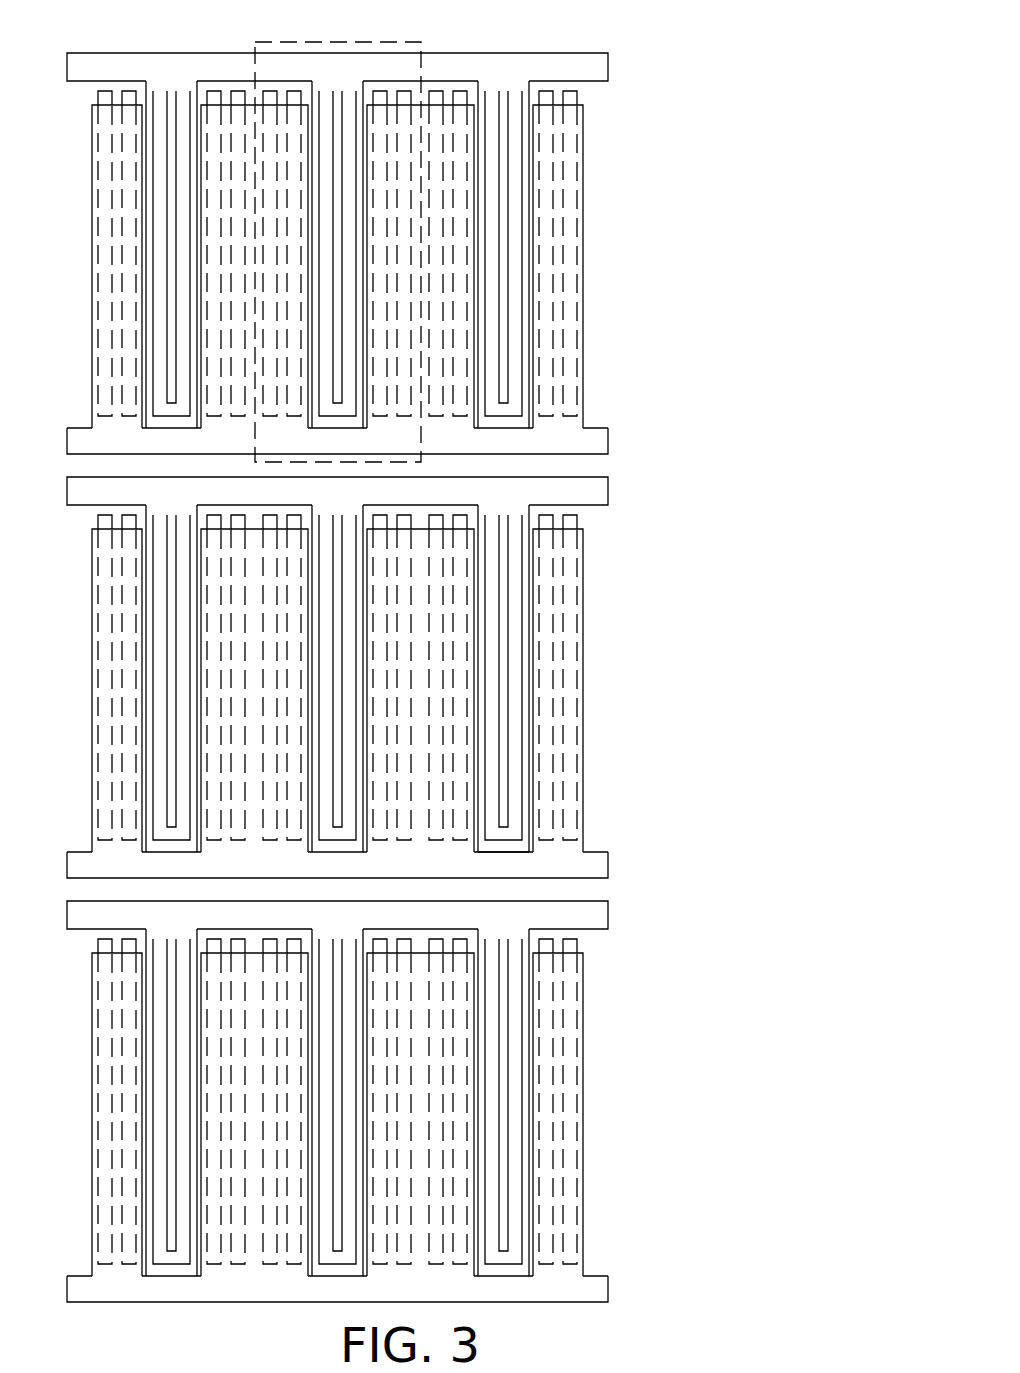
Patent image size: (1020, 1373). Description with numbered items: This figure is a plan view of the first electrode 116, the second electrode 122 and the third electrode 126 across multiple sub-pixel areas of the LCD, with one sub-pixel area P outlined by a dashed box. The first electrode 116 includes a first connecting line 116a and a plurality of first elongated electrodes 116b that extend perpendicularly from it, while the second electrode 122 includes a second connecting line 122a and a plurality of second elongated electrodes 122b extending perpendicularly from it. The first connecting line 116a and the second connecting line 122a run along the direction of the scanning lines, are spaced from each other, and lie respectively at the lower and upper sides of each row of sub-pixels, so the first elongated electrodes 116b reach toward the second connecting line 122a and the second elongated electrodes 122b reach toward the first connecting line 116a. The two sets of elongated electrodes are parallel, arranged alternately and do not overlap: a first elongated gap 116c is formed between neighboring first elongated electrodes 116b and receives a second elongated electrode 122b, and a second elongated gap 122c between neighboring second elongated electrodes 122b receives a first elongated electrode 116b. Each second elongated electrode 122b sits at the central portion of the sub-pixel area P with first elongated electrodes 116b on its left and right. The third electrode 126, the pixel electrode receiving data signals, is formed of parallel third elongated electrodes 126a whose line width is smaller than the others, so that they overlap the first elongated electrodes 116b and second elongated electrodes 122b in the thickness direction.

The sub-pixel area P is at (422, 43).
The second electrode 122 is at (436, 656).
The second connecting line 122a is at (395, 483).
The second elongated electrode 122b is at (600, 678).
The second elongated gap 122c is at (542, 509).
The third electrode 126 is at (474, 677).
The third elongated electrode 126a is at (598, 677).
The first electrode 116 is at (434, 709).
The first connecting line 116a is at (395, 877).
The first elongated electrode 116b is at (545, 683).
The first elongated gap 116c is at (599, 829).